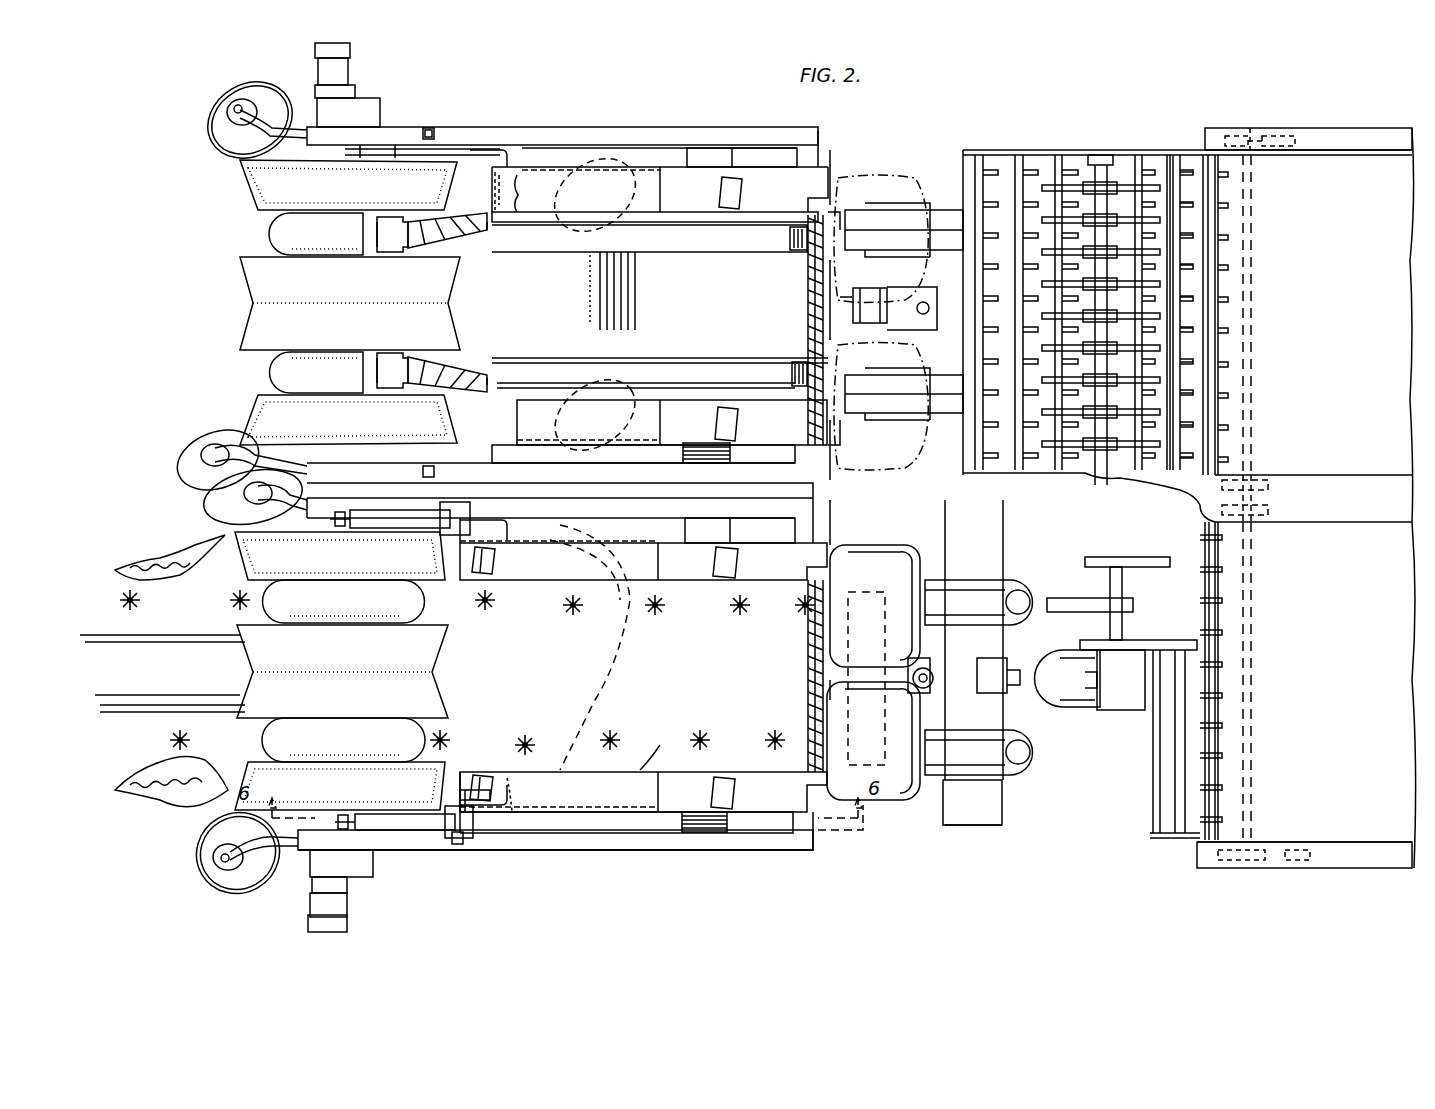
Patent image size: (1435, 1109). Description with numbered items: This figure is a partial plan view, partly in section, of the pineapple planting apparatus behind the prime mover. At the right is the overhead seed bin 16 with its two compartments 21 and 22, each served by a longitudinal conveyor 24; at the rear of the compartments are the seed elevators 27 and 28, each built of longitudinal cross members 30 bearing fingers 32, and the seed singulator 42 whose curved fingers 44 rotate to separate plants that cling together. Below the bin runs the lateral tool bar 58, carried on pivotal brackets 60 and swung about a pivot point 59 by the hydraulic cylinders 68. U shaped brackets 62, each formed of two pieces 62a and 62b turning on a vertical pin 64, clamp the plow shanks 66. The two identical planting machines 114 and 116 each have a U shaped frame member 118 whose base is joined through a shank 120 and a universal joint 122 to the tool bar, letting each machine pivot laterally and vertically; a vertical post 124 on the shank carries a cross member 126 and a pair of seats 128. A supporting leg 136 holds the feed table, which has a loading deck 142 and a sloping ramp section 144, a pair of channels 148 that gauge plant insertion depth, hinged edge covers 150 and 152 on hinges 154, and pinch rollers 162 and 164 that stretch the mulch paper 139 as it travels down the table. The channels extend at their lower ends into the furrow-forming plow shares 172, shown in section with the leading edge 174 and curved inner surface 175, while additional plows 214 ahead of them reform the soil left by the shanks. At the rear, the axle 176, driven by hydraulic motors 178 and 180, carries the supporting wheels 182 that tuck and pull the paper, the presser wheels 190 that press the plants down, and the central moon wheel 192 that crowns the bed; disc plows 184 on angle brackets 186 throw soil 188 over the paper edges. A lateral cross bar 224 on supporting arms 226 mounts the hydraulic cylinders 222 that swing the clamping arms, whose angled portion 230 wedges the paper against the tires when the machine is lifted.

The overhead seed bin 16 is at (1365, 130).
The seed bin compartment 21 is at (1314, 325).
The seed bin compartment 22 is at (1306, 695).
The longitudinal conveyor 24 is at (1197, 480).
The seed elevator 27 is at (1166, 170).
The seed elevator 28 is at (1195, 815).
The longitudinal cross member 30 is at (1137, 175).
The fingers 32 is at (1190, 172).
The seed singulator 42 is at (1090, 460).
The curved fingers 44 is at (1057, 175).
The lateral tool bar 58 is at (992, 825).
The pivot point 59 is at (1122, 580).
The brackets 60 is at (1100, 598).
The U shaped bracket 62 is at (990, 578).
The bracket piece 62a is at (958, 783).
The bracket piece 62b is at (965, 735).
The vertical pin 64 is at (1028, 752).
The plow shank 66 is at (858, 230).
The hydraulic cylinder 68 is at (1062, 690).
The planting machine 114 is at (770, 135).
The planting machine 116 is at (688, 855).
The U shaped frame member 118 is at (690, 106).
The shank 120 is at (848, 208).
The universal joint 122 is at (920, 300).
The vertical post 124 is at (840, 300).
The cross member 126 is at (872, 548).
The seats 128 is at (880, 178).
The supporting leg 136 is at (702, 155).
The mulch paper 139 is at (178, 575).
The loading deck 142 is at (845, 318).
The ramp section 144 is at (508, 200).
The channels 148 is at (345, 300).
The hinged edge covers 150 is at (765, 213).
The edge covers 152 is at (672, 722).
The hinges 154 is at (530, 820).
The pinch rollers 162 is at (723, 205).
The pinch rollers 164 is at (503, 750).
The plow shares 172 is at (452, 234).
The leading edge 174 is at (482, 213).
The curved inner surface 175 is at (418, 272).
The axle 176 is at (332, 150).
The hydraulic drive motor 178 is at (352, 70).
The hydraulic drive motor 180 is at (350, 898).
The supporting wheels 182 is at (255, 182).
The disc plows 184 is at (222, 118).
The angle brackets 186 is at (300, 115).
The soil 188 is at (210, 568).
The presser wheels 190 is at (270, 233).
The moon wheel 192 is at (238, 300).
The plows 214 is at (612, 135).
The hydraulic cylinder 222 is at (410, 518).
The lateral cross bar 224 is at (430, 535).
The supporting arms 226 is at (434, 130).
The angled portion 230 is at (485, 150).